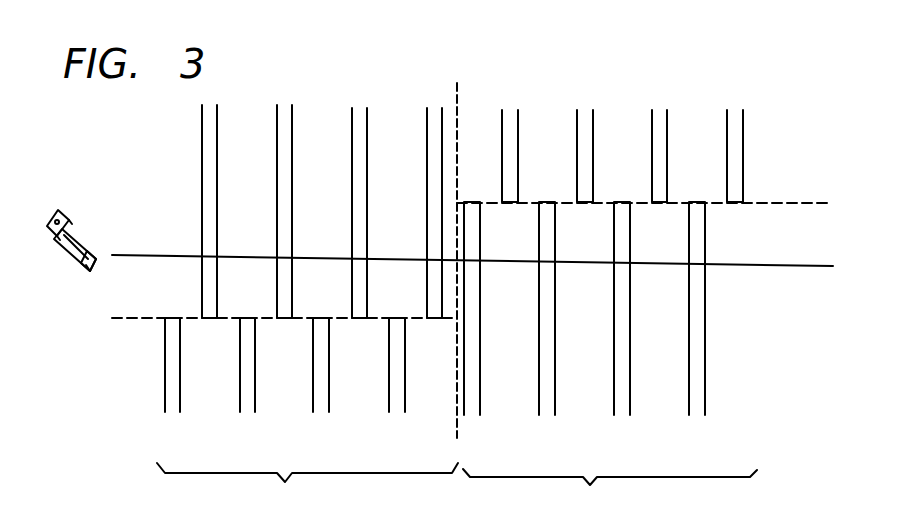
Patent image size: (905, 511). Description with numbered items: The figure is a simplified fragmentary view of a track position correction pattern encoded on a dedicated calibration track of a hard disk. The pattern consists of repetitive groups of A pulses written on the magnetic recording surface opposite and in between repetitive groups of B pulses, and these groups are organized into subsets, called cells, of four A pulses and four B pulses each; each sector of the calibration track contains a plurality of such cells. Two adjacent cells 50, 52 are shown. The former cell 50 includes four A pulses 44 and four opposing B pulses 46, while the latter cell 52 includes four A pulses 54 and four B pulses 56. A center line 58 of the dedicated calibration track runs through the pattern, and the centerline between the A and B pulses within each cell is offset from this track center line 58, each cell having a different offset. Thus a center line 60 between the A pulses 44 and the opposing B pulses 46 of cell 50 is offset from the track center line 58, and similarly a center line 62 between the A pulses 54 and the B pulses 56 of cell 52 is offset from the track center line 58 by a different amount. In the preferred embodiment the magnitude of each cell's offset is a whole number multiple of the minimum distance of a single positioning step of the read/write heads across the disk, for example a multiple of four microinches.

The A pulses 44 is at (389, 407).
The B pulses 46 is at (217, 121).
The cell 50 is at (307, 486).
The cell 52 is at (610, 490).
The A pulses 54 is at (480, 407).
The B pulses 56 is at (518, 125).
The track center line 58 is at (475, 278).
The center line 60 is at (270, 336).
The center line 62 is at (648, 188).